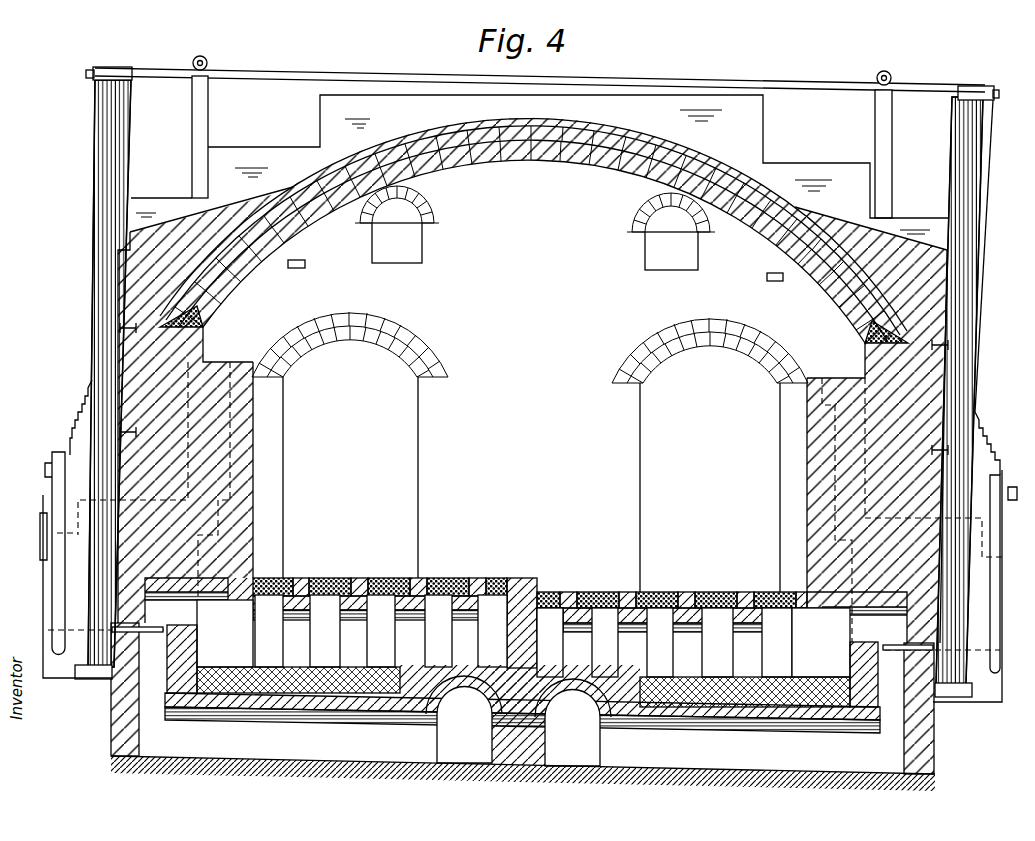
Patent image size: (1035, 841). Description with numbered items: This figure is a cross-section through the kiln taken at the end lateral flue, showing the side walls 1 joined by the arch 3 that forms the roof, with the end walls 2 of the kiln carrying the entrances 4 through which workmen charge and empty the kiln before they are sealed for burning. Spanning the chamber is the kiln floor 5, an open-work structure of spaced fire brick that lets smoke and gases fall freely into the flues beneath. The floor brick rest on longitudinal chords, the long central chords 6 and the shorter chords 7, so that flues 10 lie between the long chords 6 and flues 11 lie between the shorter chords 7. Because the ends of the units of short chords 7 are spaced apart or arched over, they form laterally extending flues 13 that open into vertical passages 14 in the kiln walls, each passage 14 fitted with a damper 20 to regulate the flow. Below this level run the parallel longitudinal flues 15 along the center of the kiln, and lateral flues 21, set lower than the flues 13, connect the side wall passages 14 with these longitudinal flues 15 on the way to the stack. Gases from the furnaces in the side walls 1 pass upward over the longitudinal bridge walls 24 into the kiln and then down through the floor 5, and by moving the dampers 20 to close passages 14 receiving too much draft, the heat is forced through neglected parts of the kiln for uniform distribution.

The side walls 1 is at (78, 440).
The end walls 2 is at (534, 280).
The arch 3 is at (598, 166).
The entrances 4 is at (530, 452).
The kiln floor 5 is at (425, 580).
The long longitudinal chords 6 is at (547, 623).
The short longitudinal chords 7 is at (537, 617).
The flues between long chords 10 is at (520, 636).
The flues between short chords 11 is at (523, 636).
The lateral flues 13 is at (523, 638).
The vertical passages 14 is at (150, 702).
The longitudinal flues 15 is at (518, 727).
The dampers 20 is at (522, 656).
The lateral flues 21 is at (523, 757).
The bridge walls 24 is at (258, 408).